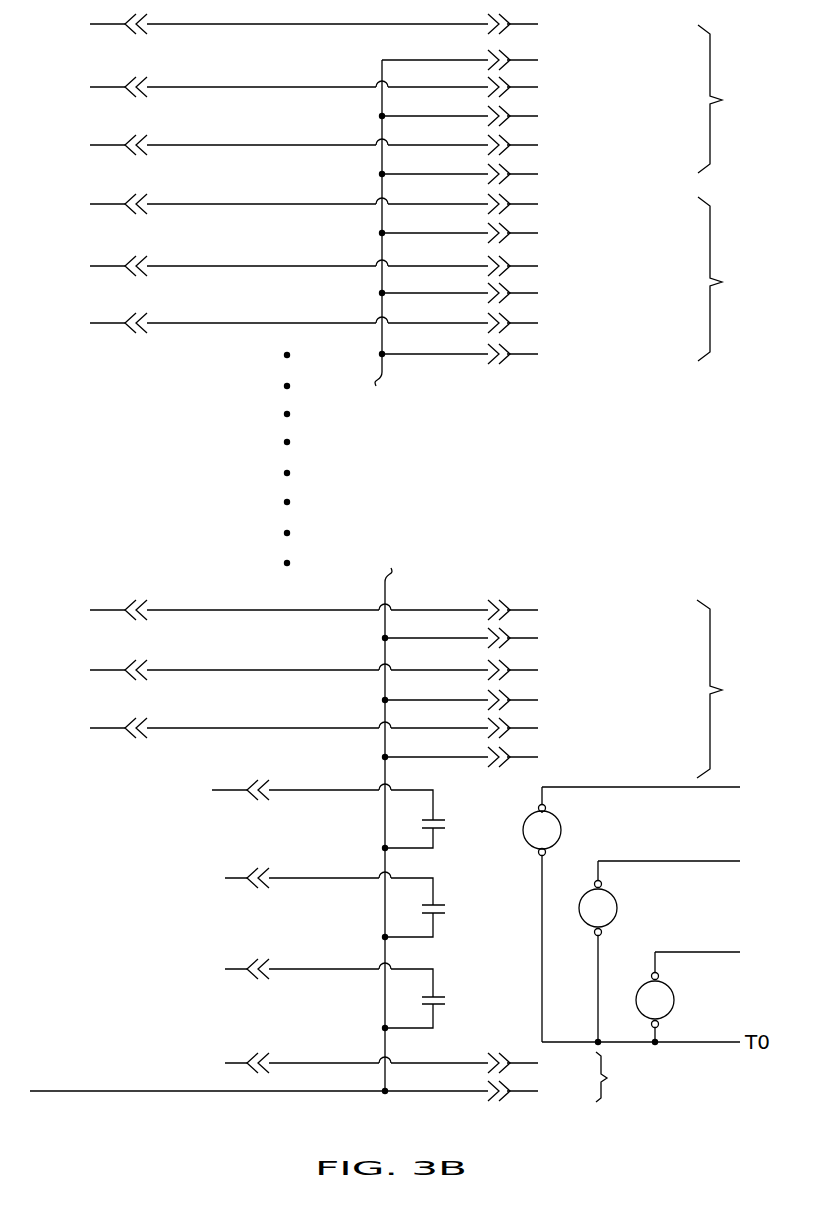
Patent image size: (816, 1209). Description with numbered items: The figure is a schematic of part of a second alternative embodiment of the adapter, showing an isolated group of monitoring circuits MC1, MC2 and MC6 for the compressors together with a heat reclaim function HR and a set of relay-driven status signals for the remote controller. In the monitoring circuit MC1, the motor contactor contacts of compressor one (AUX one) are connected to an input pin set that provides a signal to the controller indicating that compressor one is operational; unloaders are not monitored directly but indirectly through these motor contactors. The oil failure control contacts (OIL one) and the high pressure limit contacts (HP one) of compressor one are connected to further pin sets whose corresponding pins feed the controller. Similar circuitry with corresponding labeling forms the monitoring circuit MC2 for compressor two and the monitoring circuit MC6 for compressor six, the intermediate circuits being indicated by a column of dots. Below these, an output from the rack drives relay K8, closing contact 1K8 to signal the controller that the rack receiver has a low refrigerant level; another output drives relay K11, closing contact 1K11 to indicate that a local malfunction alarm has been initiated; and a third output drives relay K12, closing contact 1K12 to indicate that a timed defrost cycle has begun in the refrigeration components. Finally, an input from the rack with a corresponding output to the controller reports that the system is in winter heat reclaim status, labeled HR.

The monitoring circuit for compressor 1 MC1 is at (402, 193).
The monitoring circuit for compressor 2 MC2 is at (400, 273).
The monitoring circuit for compressor 6 MC6 is at (397, 829).
The contact of relay K8 1K8 is at (316, 808).
The contact of relay K11 1K11 is at (333, 897).
The contact of relay K12 1K12 is at (334, 988).
The relay K8 is at (645, 908).
The relay K11 is at (673, 947).
The relay K12 is at (703, 992).
The heat reclaim function HR is at (333, 1071).